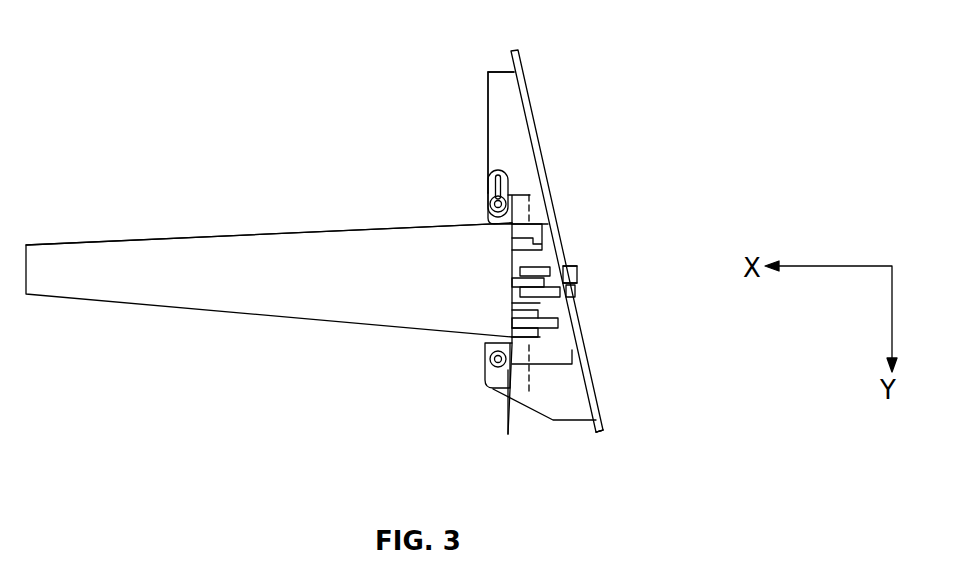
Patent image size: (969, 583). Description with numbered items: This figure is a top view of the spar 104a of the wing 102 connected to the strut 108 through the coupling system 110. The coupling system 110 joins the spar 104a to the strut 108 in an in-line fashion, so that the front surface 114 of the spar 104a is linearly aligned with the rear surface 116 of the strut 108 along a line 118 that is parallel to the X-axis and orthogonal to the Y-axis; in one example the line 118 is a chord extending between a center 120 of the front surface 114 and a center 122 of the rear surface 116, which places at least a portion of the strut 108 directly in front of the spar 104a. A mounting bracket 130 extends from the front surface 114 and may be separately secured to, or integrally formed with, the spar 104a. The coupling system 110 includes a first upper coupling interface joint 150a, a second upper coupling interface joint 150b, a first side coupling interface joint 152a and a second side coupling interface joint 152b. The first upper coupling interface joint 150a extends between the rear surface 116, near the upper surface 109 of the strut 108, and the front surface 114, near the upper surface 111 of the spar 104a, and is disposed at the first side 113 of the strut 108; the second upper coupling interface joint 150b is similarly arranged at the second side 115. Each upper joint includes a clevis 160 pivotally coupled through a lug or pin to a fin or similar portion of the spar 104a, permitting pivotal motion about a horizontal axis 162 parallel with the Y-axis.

The wing 102 is at (578, 85).
The spar 104a is at (578, 380).
The strut 108 is at (170, 243).
The upper surface of the strut 109 is at (337, 243).
The coupling system 110 is at (483, 178).
The upper surface of the spar 111 is at (558, 388).
The first side of the strut 113 is at (484, 215).
The front surface of the spar 114 is at (498, 170).
The second side of the strut 115 is at (512, 337).
The rear surface of the strut 116 is at (512, 303).
The line 118 is at (562, 262).
The center of the front surface of the spar 120 is at (568, 279).
The center of the rear surface of the strut 122 is at (512, 278).
The mounting bracket 130 is at (507, 118).
The first upper coupling interface joint 150a is at (540, 190).
The second upper coupling interface joint 150b is at (537, 326).
The first side coupling interface joint 152a is at (515, 181).
The second side coupling interface joint 152b is at (486, 382).
The clevis 160 is at (540, 237).
The axis 162 is at (532, 229).